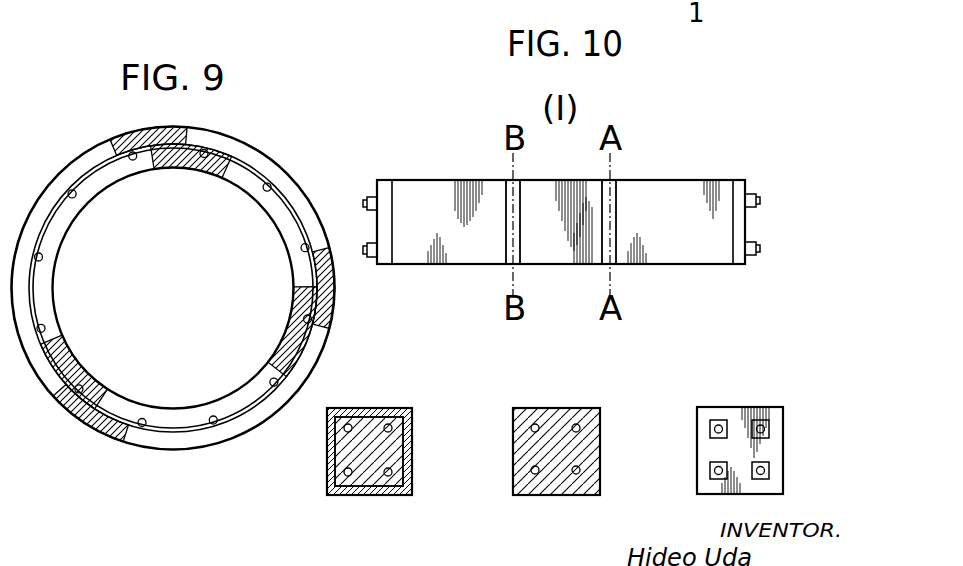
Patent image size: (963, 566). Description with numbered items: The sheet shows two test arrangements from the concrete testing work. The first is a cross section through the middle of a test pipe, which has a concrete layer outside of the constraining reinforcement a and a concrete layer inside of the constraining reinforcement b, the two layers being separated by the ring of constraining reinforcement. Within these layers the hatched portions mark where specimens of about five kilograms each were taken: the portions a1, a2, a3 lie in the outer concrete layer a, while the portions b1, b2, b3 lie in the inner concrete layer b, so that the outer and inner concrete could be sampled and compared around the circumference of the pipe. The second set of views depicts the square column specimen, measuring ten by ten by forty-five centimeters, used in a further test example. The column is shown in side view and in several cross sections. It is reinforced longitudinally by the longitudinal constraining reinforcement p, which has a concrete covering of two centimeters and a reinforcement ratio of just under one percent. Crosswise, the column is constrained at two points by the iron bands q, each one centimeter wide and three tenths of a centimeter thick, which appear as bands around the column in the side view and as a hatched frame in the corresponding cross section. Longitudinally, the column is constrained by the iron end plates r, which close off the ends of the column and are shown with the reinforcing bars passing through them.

In FIG. 9, the concrete layer outside of the constraining reinforcement a is at (300, 190).
In FIG. 9, the specimen portion a1 is at (140, 137).
In FIG. 9, the specimen portion a2 is at (90, 418).
In FIG. 9, the specimen portion a3 is at (332, 288).
In FIG. 9, the concrete layer inside of the constraining reinforcement b is at (283, 217).
In FIG. 9, the specimen portion b1 is at (190, 166).
In FIG. 9, the specimen portion b2 is at (72, 365).
In FIG. 9, the specimen portion b3 is at (290, 323).
In FIG. 10, the iron end plates r is at (377, 225).
In FIG. 10, the iron bands q is at (616, 228).
In FIG. 10, the longitudinal constraining reinforcement p is at (580, 429).